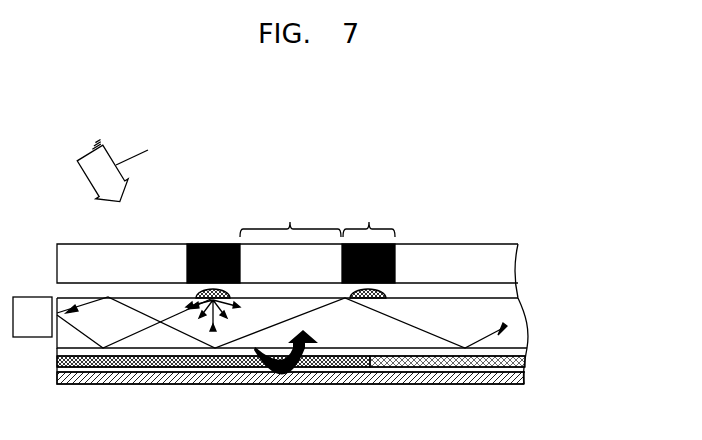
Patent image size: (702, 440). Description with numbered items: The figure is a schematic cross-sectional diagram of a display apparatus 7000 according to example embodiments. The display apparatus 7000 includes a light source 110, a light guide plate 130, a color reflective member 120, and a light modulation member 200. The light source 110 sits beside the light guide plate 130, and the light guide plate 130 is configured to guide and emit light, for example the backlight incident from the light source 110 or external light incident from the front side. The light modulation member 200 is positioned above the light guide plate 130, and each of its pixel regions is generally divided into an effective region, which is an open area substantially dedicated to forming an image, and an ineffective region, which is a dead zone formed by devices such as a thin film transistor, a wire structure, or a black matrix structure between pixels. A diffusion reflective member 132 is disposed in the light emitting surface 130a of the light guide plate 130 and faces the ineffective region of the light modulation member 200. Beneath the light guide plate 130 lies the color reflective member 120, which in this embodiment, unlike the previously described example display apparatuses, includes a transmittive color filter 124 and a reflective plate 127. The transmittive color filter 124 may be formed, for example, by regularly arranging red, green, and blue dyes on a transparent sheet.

The display apparatus 7000 is at (468, 152).
The light modulation member 200 is at (542, 243).
The light guide plate 130 is at (322, 262).
The light emitting surface 130a is at (443, 297).
The diffusion reflective member 132 is at (381, 288).
The color reflective member 120 is at (322, 384).
The transmittive color filter 124 is at (418, 359).
The reflective plate 127 is at (443, 373).
The light source 110 is at (32, 338).